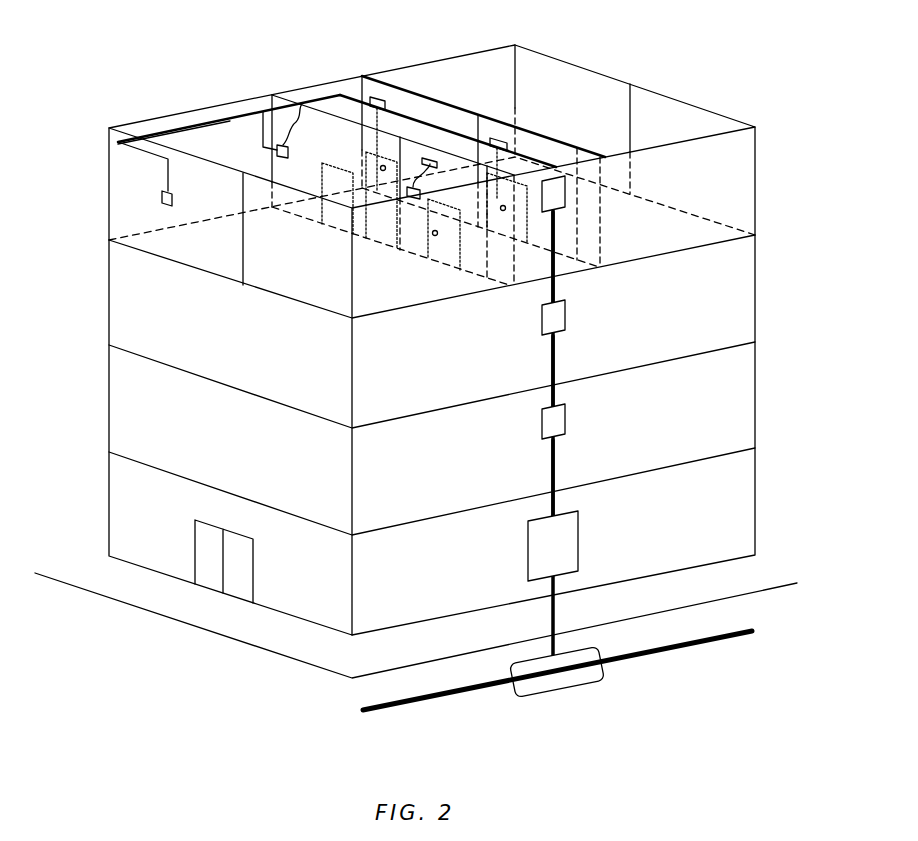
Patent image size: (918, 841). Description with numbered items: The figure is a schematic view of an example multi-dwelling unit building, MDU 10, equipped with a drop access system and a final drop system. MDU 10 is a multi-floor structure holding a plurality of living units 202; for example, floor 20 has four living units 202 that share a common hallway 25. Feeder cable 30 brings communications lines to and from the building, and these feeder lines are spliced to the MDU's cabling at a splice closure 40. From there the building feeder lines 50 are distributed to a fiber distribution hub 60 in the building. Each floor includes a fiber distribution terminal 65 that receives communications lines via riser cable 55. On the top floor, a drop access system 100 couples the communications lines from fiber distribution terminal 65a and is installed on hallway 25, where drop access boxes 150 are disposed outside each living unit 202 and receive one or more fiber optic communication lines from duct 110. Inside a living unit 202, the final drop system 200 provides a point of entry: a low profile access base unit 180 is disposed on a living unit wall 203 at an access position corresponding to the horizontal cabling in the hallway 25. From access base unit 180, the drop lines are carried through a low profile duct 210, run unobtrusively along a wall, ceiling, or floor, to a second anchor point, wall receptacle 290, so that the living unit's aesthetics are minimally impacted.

The MDU 10 is at (200, 24).
The floor 20 is at (655, 91).
The common hallway 25 is at (336, 93).
The feeder cable 30 is at (454, 697).
The splice closure 40 is at (557, 672).
The building feeder lines 50 is at (551, 621).
The riser cable 55 is at (551, 287).
The fiber distribution hub 60 is at (553, 546).
The fiber distribution terminal 65 is at (566, 317).
The fiber distribution terminal 65a is at (566, 195).
The drop access system 100 is at (303, 92).
The duct 110 is at (327, 98).
The drop access boxes 150 is at (432, 160).
The low profile access base unit 180 is at (276, 150).
The system 200 is at (199, 130).
The living unit 202 is at (190, 214).
The living unit wall 203 is at (279, 127).
The duct 210 is at (166, 128).
The wall receptacle 290 is at (161, 198).